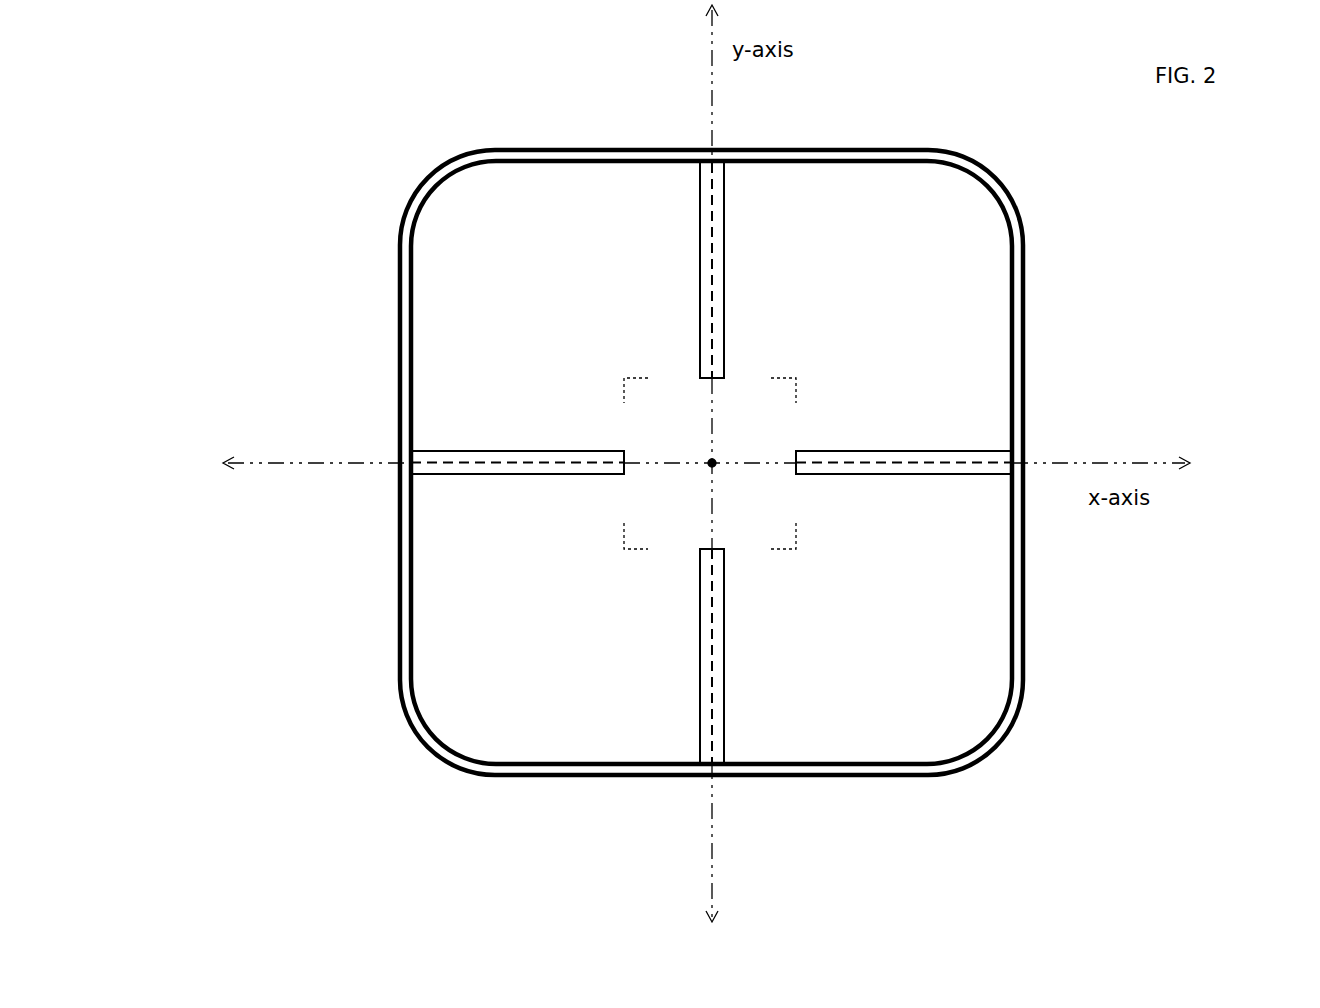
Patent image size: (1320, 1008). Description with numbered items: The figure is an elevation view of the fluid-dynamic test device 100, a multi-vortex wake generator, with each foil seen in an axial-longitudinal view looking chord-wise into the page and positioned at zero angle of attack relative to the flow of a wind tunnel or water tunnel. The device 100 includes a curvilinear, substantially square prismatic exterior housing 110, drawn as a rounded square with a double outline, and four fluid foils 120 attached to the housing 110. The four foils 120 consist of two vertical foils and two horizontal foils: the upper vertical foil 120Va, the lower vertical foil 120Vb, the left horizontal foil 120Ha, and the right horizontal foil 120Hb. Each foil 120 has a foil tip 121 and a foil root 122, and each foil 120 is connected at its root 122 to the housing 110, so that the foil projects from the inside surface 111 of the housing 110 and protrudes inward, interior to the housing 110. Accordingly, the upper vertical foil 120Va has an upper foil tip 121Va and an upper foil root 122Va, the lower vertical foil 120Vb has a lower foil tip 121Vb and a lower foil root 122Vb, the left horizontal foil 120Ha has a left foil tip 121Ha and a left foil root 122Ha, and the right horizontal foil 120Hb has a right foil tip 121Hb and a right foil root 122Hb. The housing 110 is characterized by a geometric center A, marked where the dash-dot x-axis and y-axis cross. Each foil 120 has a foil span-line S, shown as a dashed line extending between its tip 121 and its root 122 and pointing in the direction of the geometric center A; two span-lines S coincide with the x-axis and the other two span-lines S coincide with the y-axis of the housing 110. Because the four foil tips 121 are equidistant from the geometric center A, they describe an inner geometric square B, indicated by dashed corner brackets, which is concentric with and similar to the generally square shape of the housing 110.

The fluid-dynamic test device 100 is at (747, 511).
The exterior housing 110 is at (635, 462).
The inside surface 111 is at (414, 331).
The fluid foil 120 is at (711, 462).
The upper vertical foil 120Va is at (698, 270).
The lower vertical foil 120Vb is at (724, 655).
The left horizontal foil 120Ha is at (518, 477).
The right horizontal foil 120Hb is at (905, 452).
The foil tip 121 is at (713, 463).
The upper foil tip 121Va is at (720, 380).
The lower foil tip 121Vb is at (707, 548).
The left foil tip 121Ha is at (636, 445).
The right foil tip 121Hb is at (786, 478).
The foil root 122 is at (684, 463).
The upper foil root 122Va is at (706, 160).
The lower foil root 122Vb is at (712, 768).
The left foil root 122Ha is at (405, 461).
The right foil root 122Hb is at (1013, 457).
The foil span-line S is at (722, 222).
The geometric center A is at (714, 462).
The inner geometric square B is at (642, 378).